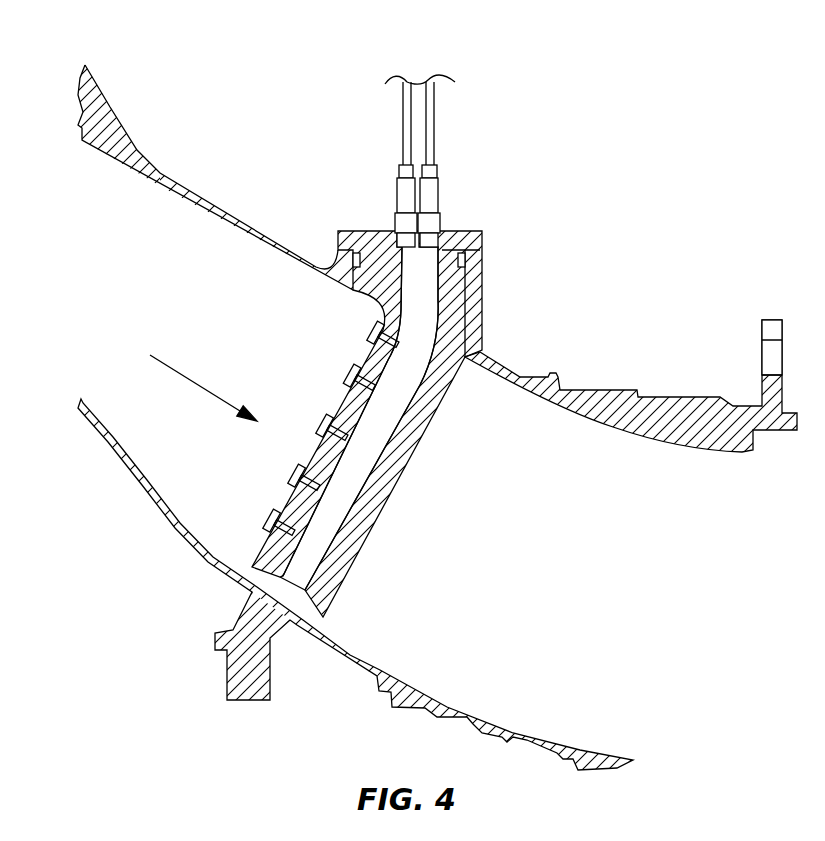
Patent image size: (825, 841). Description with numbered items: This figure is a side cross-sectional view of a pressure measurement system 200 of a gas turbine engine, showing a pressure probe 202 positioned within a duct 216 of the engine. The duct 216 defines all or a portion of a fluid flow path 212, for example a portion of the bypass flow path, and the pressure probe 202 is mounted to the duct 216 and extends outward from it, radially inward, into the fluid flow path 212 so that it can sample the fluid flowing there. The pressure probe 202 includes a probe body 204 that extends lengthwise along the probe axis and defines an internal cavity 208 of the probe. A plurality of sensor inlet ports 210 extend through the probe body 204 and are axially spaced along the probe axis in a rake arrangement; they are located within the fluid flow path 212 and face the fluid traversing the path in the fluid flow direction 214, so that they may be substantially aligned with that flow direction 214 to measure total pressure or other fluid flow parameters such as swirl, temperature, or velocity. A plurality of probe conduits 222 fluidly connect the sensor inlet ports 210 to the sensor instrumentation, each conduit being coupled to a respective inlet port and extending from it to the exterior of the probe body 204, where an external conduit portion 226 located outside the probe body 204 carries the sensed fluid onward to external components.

The pressure measurement system 200 is at (668, 112).
The pressure probe 202 is at (397, 424).
The probe body 204 is at (440, 392).
The internal cavity 208 is at (342, 493).
The sensor inlet ports 210 is at (343, 371).
The fluid flow path 212 is at (212, 293).
The fluid flow direction 214 is at (185, 390).
The duct 216 is at (548, 377).
The probe conduits 222 is at (464, 135).
The external conduit portion 226 is at (388, 135).